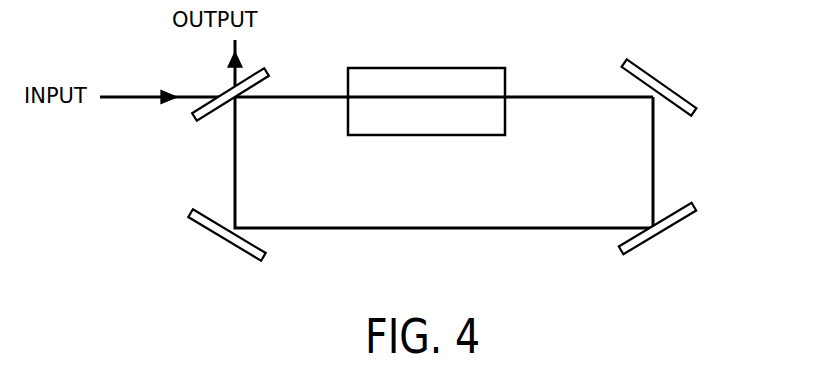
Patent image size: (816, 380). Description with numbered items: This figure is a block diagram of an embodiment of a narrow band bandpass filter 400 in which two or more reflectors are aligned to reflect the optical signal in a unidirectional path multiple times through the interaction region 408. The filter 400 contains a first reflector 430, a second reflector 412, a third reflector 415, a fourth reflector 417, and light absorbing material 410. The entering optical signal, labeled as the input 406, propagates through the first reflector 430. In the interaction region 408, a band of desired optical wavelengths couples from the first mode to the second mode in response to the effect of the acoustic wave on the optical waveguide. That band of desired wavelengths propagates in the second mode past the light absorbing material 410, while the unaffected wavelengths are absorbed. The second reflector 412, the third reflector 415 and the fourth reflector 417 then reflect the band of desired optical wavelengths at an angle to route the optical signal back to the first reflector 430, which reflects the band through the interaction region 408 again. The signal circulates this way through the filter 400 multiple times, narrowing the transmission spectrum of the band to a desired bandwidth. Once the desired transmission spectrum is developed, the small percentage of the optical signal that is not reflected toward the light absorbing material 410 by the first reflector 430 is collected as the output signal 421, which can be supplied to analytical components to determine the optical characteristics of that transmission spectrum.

The narrow band bandpass filter 400 is at (751, 297).
The input beam 406 is at (132, 80).
The interaction region 408 is at (307, 78).
The light absorbing material 410 is at (426, 85).
The second reflector 412 is at (659, 87).
The third reflector 415 is at (659, 232).
The fourth reflector 417 is at (226, 241).
The output signal 421 is at (258, 51).
The first reflector 430 is at (190, 76).